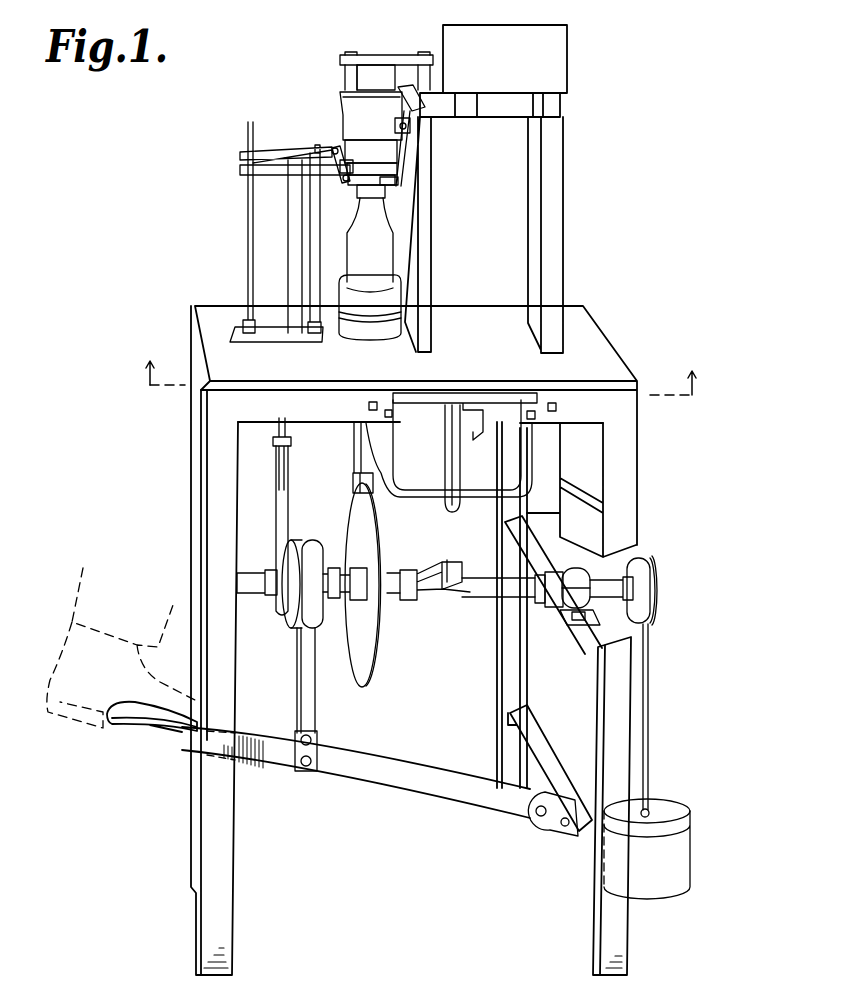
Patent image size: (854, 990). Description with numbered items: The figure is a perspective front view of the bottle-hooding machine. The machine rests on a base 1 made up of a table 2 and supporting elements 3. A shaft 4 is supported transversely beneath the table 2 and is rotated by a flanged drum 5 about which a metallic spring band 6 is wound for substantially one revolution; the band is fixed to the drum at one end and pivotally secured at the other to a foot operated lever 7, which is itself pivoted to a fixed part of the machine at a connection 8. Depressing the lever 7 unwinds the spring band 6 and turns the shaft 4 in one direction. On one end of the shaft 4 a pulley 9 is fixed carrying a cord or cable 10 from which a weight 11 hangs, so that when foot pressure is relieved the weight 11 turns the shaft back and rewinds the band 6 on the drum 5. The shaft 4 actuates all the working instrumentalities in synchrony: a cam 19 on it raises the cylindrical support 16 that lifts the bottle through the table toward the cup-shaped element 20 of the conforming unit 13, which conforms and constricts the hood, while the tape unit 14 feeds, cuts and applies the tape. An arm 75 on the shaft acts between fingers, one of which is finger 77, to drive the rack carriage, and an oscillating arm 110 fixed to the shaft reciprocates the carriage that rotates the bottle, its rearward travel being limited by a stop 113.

The base 1 is at (667, 355).
The table 2 is at (582, 311).
The supporting elements 3 is at (622, 459).
The shaft 4 is at (471, 597).
The flanged drum 5 is at (285, 614).
The spring band 6 is at (298, 690).
The foot operated lever 7 is at (345, 764).
The clevis 8 is at (540, 828).
The pulley 9 is at (658, 580).
The cord or cable 10 is at (650, 676).
The weight 11 is at (670, 812).
The conforming unit 13 is at (360, 123).
The tape feeding unit 14 is at (290, 258).
The cylindrical support 16 is at (382, 301).
The cam 19 is at (383, 521).
The cup-shaped element 20 is at (423, 367).
The arm 75 is at (284, 509).
The finger 77 is at (284, 463).
The oscillating arm 110 is at (477, 542).
The stop 113 is at (455, 466).